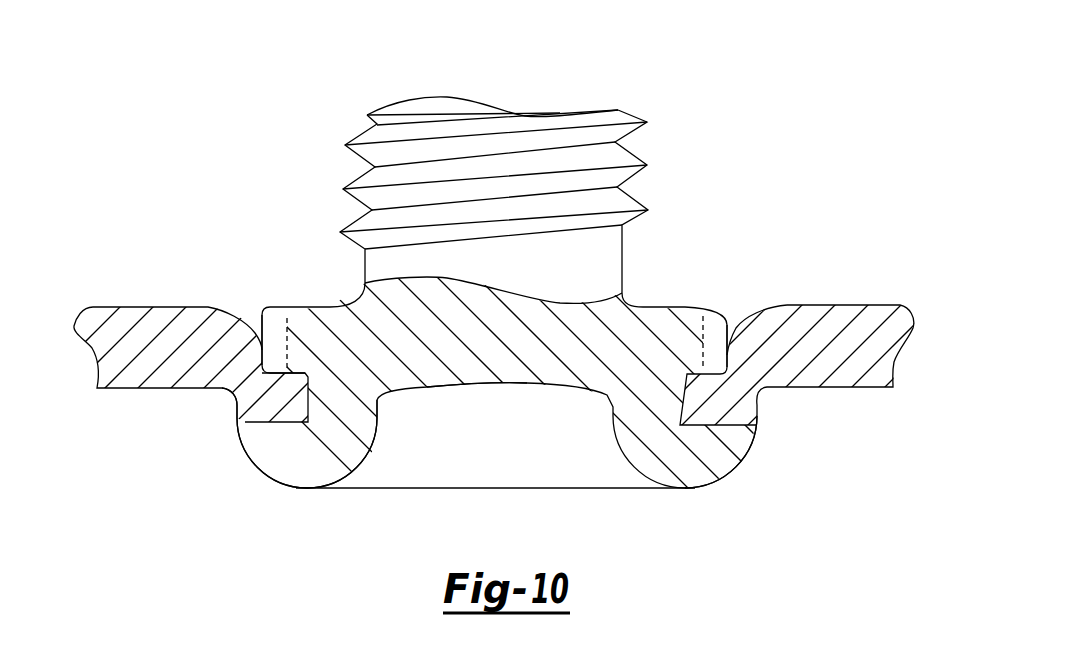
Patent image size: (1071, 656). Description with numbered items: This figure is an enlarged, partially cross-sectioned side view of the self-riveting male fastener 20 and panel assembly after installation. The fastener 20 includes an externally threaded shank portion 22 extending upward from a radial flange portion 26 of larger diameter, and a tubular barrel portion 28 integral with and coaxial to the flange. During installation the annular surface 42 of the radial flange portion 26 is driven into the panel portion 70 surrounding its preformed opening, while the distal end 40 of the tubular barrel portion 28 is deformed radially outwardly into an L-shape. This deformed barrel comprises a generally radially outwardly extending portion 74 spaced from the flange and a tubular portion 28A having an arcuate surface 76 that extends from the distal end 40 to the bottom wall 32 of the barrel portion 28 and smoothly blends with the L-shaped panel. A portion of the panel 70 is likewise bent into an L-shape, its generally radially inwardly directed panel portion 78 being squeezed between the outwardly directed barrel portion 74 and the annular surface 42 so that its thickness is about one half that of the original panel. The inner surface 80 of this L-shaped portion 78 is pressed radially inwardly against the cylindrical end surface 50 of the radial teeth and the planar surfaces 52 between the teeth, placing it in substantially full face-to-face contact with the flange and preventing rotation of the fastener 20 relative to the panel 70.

The self-riveting male fastener 20 is at (710, 112).
The shank portion 22 is at (418, 126).
The radial flange portion 26 is at (670, 305).
The tubular barrel portion 28 is at (684, 462).
The tubular portion 28A is at (350, 403).
The bottom wall 32 is at (517, 383).
The distal end 40 is at (240, 430).
The annular surface 42 is at (753, 422).
The cylindrical end surface 50 is at (735, 348).
The planar surfaces 52 is at (709, 337).
The panel portion 70 is at (123, 307).
The radially outwardly extending portion 74 is at (260, 462).
The arcuate surface 76 is at (343, 477).
The radially inwardly directed panel portion 78 is at (290, 386).
The inner surface 80 is at (258, 342).